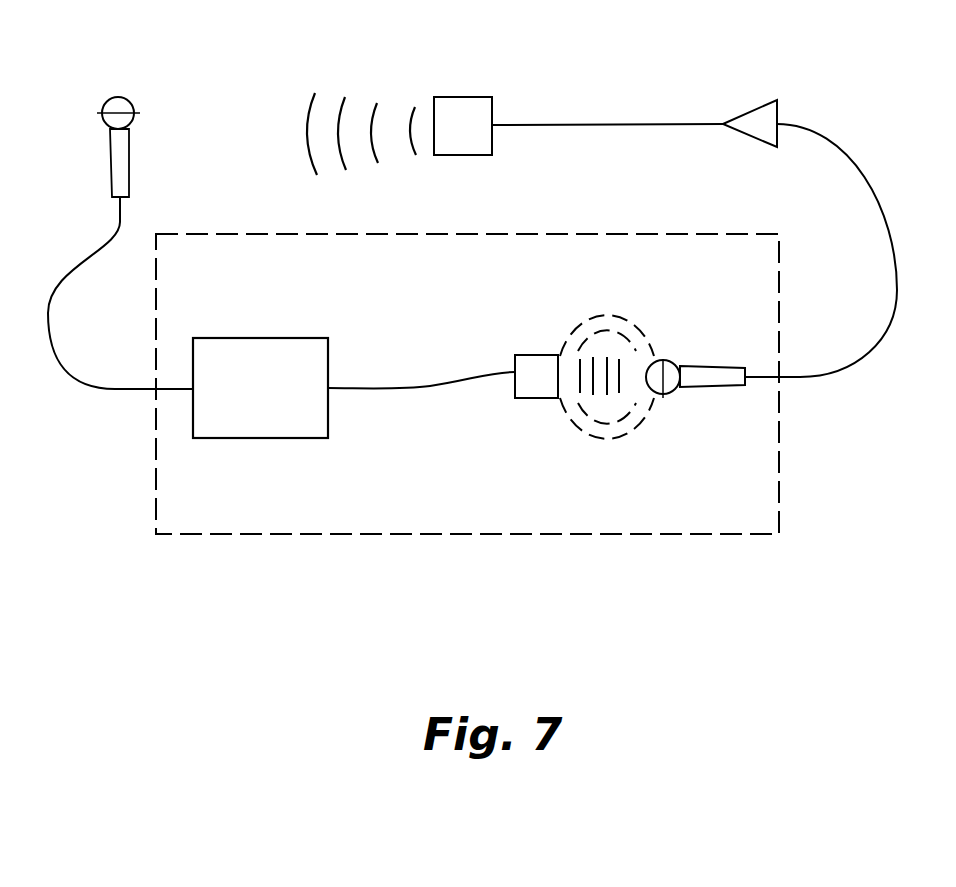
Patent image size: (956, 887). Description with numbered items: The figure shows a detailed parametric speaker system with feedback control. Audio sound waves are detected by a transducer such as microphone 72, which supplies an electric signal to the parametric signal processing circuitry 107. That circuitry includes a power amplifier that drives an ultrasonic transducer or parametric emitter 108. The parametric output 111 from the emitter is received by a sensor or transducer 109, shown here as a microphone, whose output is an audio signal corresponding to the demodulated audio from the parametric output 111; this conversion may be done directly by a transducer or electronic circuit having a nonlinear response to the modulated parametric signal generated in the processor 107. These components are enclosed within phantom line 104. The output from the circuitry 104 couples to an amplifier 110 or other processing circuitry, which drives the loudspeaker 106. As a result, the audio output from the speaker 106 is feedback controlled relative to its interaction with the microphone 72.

The microphone 72 is at (128, 153).
The phantom line 104 is at (517, 535).
The loudspeaker 106 is at (463, 97).
The parametric signal processing circuitry 107 is at (267, 438).
The parametric emitter 108 is at (527, 355).
The transducer 109 is at (693, 387).
The amplifier 110 is at (758, 100).
The parametric output 111 is at (598, 438).